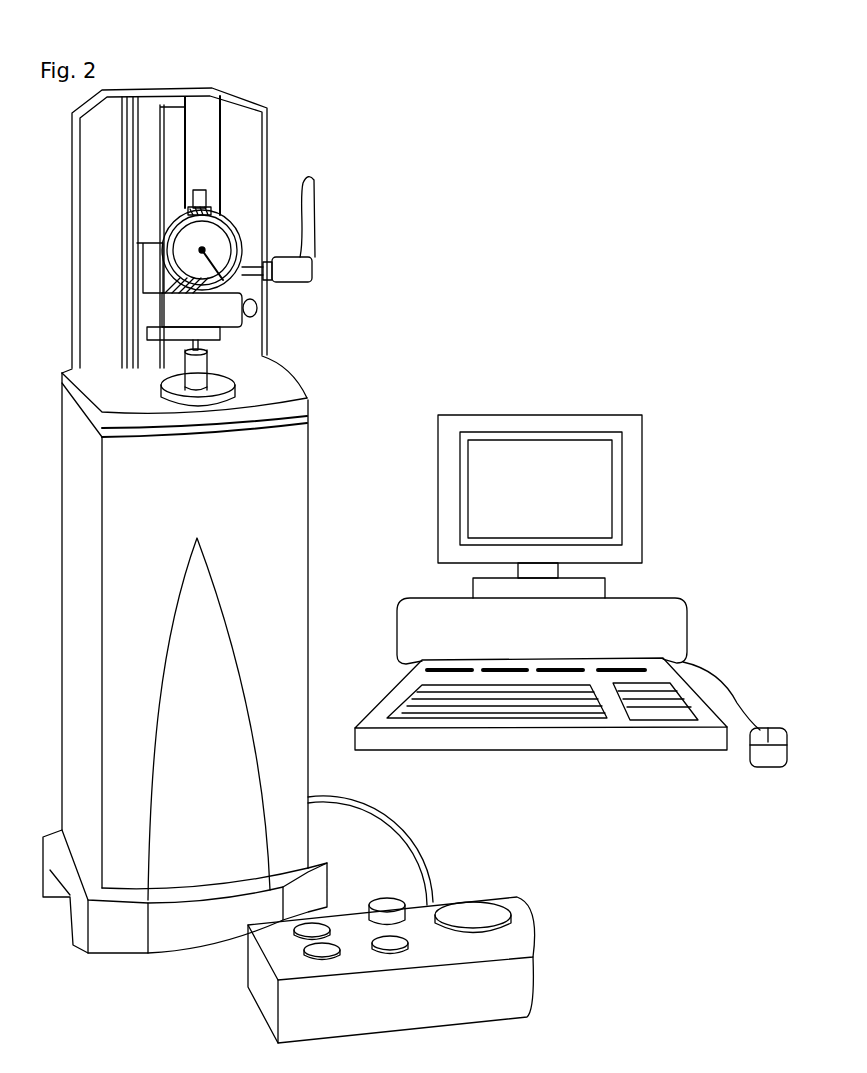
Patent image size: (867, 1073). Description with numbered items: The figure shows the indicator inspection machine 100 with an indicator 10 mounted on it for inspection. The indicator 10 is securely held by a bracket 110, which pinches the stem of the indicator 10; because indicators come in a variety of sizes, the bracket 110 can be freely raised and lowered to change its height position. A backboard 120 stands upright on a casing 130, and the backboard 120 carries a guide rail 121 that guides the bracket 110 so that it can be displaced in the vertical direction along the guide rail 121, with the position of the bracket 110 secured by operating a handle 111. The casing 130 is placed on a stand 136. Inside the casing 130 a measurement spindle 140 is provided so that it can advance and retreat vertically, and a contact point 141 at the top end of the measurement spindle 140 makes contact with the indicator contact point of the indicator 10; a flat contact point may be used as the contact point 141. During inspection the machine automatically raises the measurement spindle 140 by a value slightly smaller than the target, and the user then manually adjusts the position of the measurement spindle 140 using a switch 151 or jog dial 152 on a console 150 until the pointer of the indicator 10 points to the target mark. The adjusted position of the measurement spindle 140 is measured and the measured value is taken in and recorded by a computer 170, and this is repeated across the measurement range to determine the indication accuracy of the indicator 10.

The indicator inspection machine 100 is at (372, 336).
The indicator 10 is at (213, 214).
The bracket 110 is at (262, 312).
The handle 111 is at (316, 214).
The backboard 120 is at (262, 122).
The guide rail 121 is at (176, 167).
The casing 130 is at (290, 491).
The stand 136 is at (118, 952).
The measurement spindle 140 is at (240, 367).
The contact point 141 is at (166, 374).
The console 150 is at (525, 905).
The switch 151 is at (392, 900).
The jog dial 152 is at (465, 900).
The computer 170 is at (660, 603).